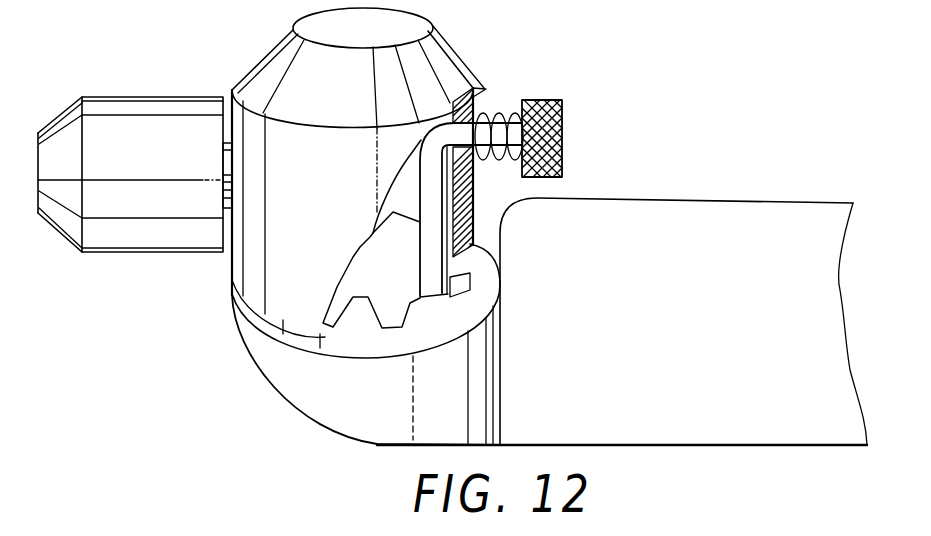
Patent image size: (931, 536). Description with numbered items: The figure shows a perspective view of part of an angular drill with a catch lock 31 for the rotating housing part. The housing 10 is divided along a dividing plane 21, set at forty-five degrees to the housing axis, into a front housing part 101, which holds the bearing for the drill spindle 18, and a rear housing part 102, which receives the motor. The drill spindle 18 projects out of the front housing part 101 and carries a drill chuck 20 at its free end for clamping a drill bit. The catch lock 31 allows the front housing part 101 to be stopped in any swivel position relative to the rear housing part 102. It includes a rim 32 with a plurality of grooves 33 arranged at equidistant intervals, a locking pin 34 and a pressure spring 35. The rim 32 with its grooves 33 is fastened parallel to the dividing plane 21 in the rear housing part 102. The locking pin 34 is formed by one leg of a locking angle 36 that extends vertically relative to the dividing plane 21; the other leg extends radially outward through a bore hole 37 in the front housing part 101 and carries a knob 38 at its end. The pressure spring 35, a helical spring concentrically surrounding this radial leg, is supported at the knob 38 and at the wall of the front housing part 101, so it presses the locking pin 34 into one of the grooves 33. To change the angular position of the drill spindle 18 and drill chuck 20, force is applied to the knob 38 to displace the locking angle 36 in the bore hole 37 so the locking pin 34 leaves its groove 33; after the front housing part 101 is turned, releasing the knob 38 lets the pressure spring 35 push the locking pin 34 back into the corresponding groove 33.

The housing 10 is at (817, 183).
The drill spindle 18 is at (227, 163).
The drill chuck 20 is at (120, 140).
The dividing plane 21 is at (273, 366).
The catch lock 31 is at (443, 347).
The rim 32 is at (345, 337).
The grooves 33 is at (388, 322).
The locking pin 34 is at (436, 248).
The pressure spring 35 is at (507, 114).
The locking angle 36 is at (472, 85).
The bore hole 37 is at (472, 161).
The knob 38 is at (563, 135).
The front housing part 101 is at (258, 282).
The rear housing part 102 is at (817, 313).